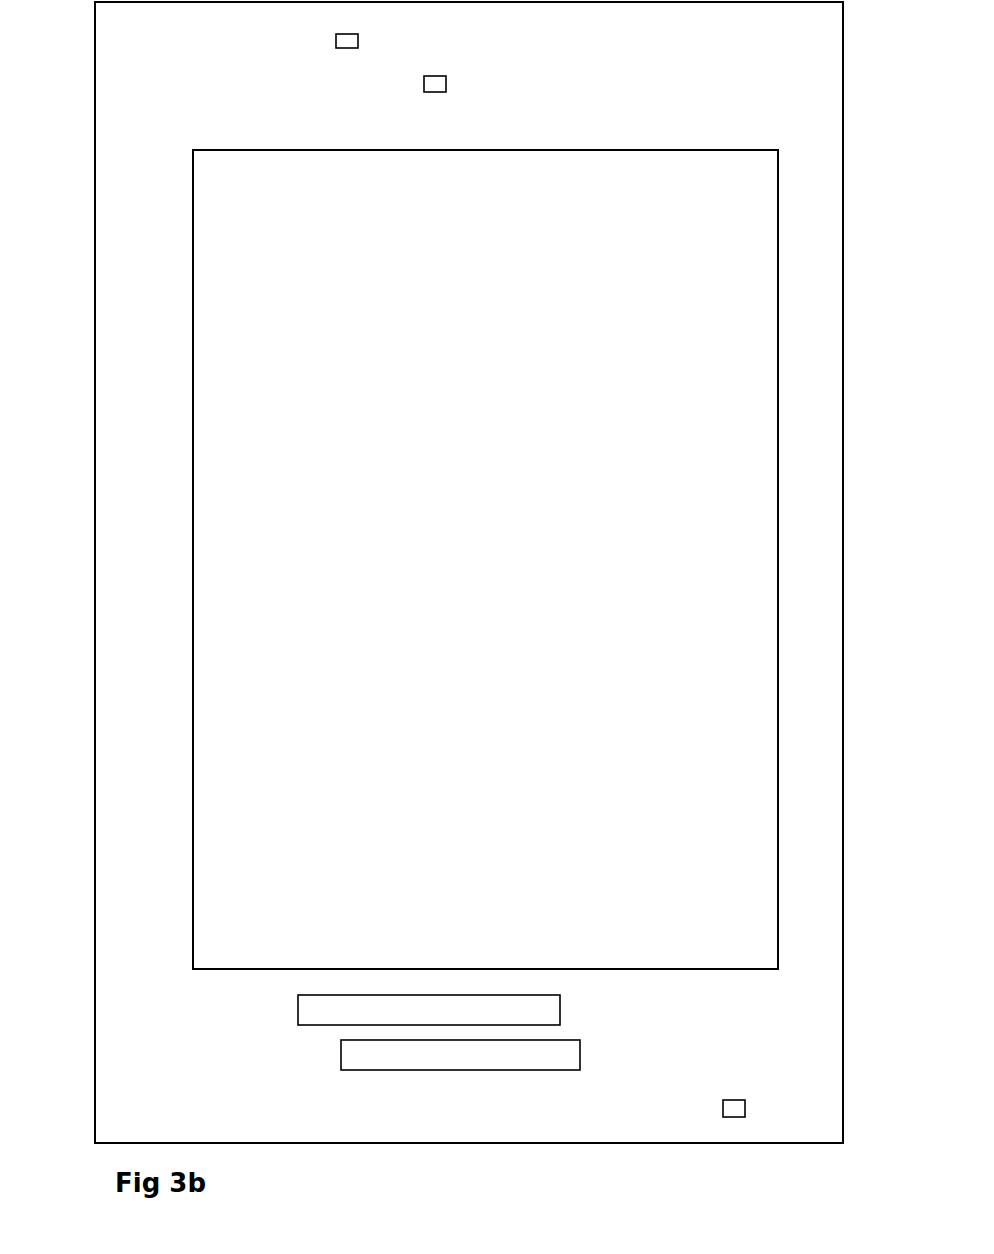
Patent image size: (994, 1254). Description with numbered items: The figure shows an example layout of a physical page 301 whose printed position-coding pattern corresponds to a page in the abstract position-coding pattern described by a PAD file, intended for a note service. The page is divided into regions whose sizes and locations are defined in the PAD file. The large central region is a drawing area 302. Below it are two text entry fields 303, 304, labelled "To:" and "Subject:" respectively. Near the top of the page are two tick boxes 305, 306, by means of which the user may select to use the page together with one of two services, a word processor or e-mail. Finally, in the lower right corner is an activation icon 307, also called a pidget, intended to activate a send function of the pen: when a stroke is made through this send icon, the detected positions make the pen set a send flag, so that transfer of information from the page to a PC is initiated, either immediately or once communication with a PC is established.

The physical page 301 is at (93, 557).
The drawing area 302 is at (192, 498).
The text entry field 303 is at (560, 1012).
The text entry field 304 is at (580, 1057).
The tick box 305 is at (446, 85).
The tick box 306 is at (359, 42).
The activation icon 307 is at (734, 1100).